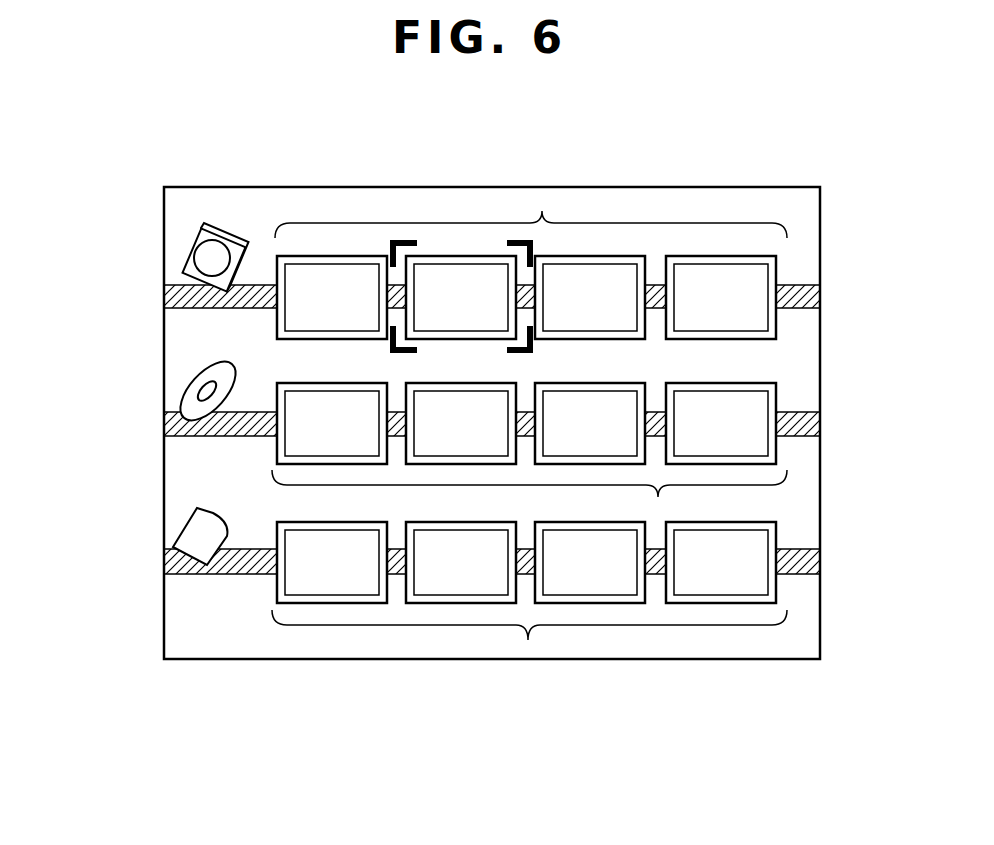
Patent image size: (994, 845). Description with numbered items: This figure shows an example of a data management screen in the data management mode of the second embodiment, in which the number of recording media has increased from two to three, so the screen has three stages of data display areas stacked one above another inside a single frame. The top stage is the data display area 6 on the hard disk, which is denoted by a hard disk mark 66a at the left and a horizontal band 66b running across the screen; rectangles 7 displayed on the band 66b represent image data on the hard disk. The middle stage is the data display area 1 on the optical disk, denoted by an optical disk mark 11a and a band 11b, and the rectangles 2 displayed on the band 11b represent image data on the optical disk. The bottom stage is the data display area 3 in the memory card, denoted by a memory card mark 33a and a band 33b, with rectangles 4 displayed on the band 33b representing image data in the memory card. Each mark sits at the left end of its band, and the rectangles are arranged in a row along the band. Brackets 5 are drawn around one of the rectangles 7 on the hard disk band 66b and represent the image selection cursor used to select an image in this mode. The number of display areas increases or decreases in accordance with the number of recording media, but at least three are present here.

The data display area on the optical disk 1 is at (441, 448).
The rectangles 2 is at (658, 497).
The data display area in the memory card 3 is at (439, 585).
The rectangles 4 is at (528, 640).
The brackets 5 is at (407, 243).
The data display area on the hard disk 6 is at (440, 320).
The rectangles 7 is at (531, 237).
The optical disk mark 11a is at (190, 378).
The band 11b is at (222, 437).
The memory card mark 33a is at (190, 522).
The band 33b is at (222, 575).
The hard disk mark 66a is at (194, 250).
The band 66b is at (222, 309).